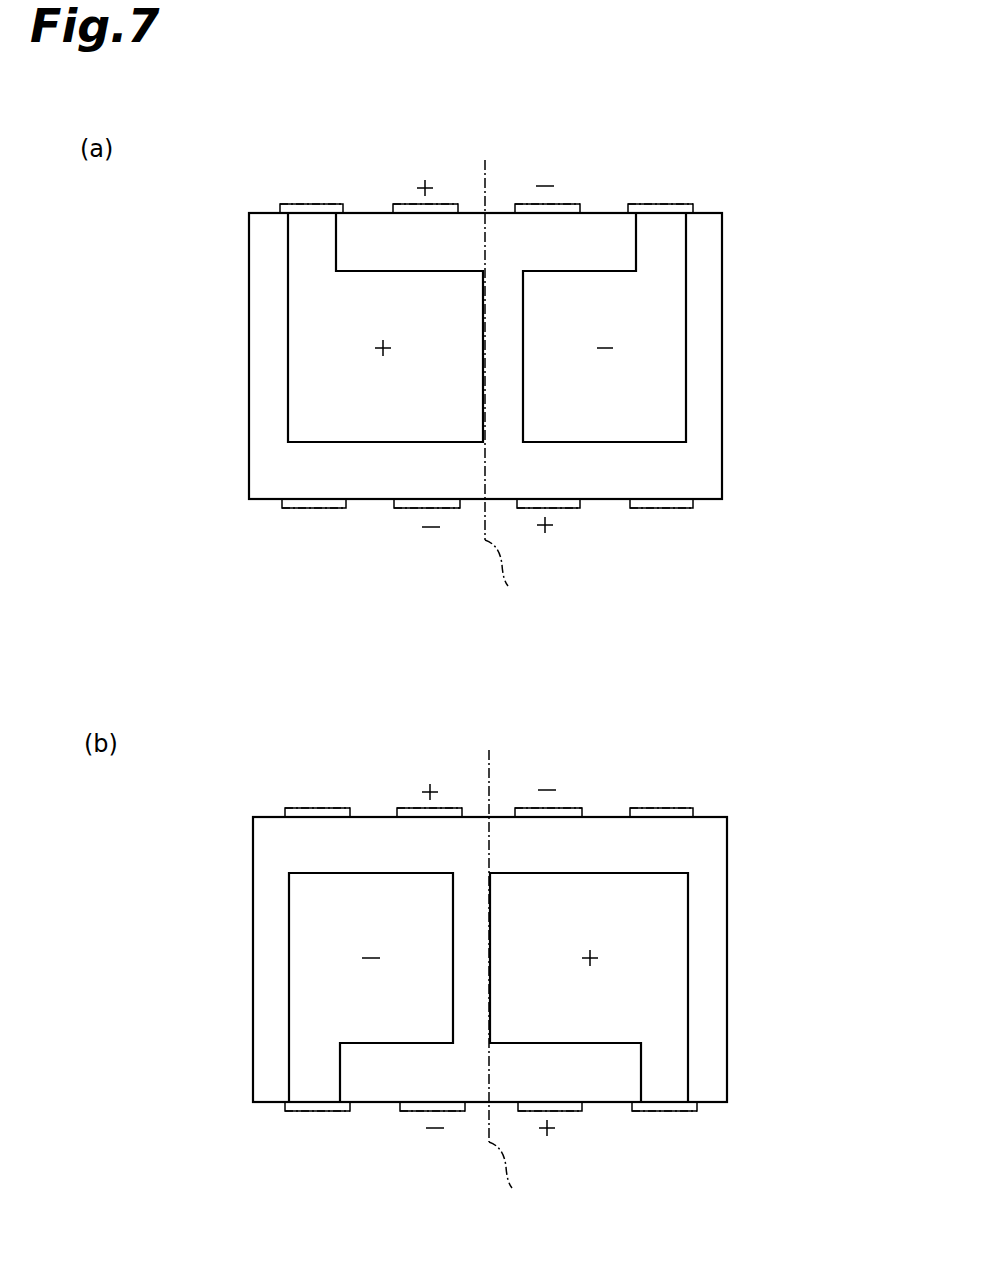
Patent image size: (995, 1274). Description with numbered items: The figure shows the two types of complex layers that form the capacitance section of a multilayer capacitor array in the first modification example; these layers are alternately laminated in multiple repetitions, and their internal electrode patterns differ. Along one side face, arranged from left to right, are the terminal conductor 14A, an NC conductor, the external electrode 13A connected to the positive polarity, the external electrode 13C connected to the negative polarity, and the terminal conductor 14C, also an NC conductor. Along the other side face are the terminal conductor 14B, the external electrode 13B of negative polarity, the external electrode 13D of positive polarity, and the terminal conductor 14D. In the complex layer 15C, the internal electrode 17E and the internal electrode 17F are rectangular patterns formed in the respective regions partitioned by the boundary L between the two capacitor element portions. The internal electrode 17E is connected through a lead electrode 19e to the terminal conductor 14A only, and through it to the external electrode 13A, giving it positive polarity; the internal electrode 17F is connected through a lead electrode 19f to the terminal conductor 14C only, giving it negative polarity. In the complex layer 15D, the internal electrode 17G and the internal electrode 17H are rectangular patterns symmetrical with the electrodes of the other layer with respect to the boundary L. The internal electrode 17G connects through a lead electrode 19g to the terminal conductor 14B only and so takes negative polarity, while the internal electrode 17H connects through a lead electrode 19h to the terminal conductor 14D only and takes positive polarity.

The external electrode 13A is at (405, 204).
The external electrode 13B is at (409, 508).
The external electrode 13C is at (572, 204).
The external electrode 13D is at (568, 508).
The terminal conductor 14A is at (292, 204).
The terminal conductor 14B is at (289, 508).
The terminal conductor 14C is at (688, 204).
The terminal conductor 14D is at (689, 508).
The complex layer 15C is at (782, 182).
The complex layer 15D is at (787, 786).
The internal electrode 17E is at (305, 347).
The internal electrode 17F is at (668, 344).
The internal electrode 17G is at (310, 970).
The internal electrode 17H is at (670, 970).
The lead electrode 19e is at (302, 244).
The lead electrode 19f is at (668, 242).
The lead electrode 19g is at (308, 1072).
The lead electrode 19h is at (676, 1066).
The boundary L is at (509, 686).